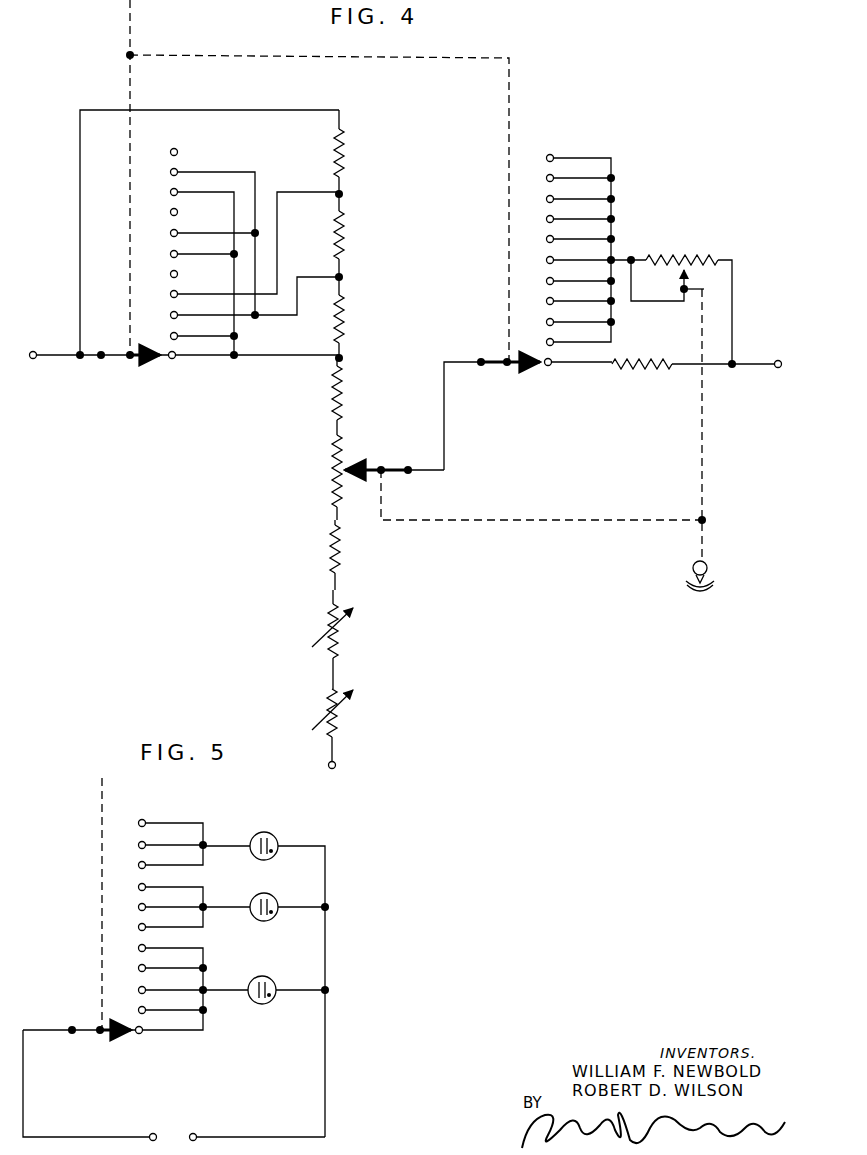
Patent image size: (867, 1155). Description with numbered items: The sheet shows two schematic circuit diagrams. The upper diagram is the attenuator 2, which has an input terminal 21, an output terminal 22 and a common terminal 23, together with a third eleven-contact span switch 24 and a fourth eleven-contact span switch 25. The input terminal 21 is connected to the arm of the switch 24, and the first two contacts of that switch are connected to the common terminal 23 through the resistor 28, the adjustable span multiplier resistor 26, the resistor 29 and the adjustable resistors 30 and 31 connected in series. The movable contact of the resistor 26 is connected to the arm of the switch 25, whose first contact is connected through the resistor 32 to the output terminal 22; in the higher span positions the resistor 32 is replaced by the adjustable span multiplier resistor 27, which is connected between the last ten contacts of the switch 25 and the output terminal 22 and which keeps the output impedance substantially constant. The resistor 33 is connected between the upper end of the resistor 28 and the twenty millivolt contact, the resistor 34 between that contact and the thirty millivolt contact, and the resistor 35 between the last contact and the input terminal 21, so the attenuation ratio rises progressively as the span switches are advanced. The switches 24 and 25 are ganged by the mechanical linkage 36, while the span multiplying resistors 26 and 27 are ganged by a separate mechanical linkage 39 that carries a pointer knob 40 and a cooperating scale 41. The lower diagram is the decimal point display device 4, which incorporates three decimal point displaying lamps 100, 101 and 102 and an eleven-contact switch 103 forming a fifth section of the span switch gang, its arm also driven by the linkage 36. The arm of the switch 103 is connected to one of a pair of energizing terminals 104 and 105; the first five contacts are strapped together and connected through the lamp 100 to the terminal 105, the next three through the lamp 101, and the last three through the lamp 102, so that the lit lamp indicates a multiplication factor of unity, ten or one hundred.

In FIG. 4, the attenuator 2 is at (470, 590).
In FIG. 5, the decimal point display device 4 is at (398, 930).
In FIG. 4, the input terminal 21 is at (33, 351).
In FIG. 4, the output terminal 22 is at (778, 360).
In FIG. 4, the common terminal 23 is at (336, 765).
In FIG. 4, the third eleven-contact span switch 24 is at (136, 398).
In FIG. 4, the fourth eleven-contact span switch 25 is at (518, 390).
In FIG. 4, the adjustable span multiplier resistor 26 is at (330, 470).
In FIG. 4, the adjustable span multiplier resistor 27 is at (684, 262).
In FIG. 4, the resistor 28 is at (343, 403).
In FIG. 4, the resistor 29 is at (341, 560).
In FIG. 4, the resistor 30 is at (342, 632).
In FIG. 4, the resistor 31 is at (342, 720).
In FIG. 4, the resistor 32 is at (645, 361).
In FIG. 4, the resistor 33 is at (345, 324).
In FIG. 4, the resistor 34 is at (345, 240).
In FIG. 4, the resistor 35 is at (345, 165).
In FIG. 4, the mechanical linkage 36 is at (128, 68).
In FIG. 5, the mechanical linkage 36 is at (100, 855).
In FIG. 4, the mechanical linkage 39 is at (575, 518).
In FIG. 4, the pointer knob 40 is at (707, 566).
In FIG. 4, the scale 41 is at (704, 596).
In FIG. 5, the lamp 100 is at (268, 976).
In FIG. 5, the lamp 101 is at (268, 893).
In FIG. 5, the lamp 102 is at (268, 832).
In FIG. 5, the eleven-contact switch 103 is at (116, 1042).
In FIG. 5, the energizing terminal 104 is at (153, 1132).
In FIG. 5, the energizing terminal 105 is at (193, 1132).